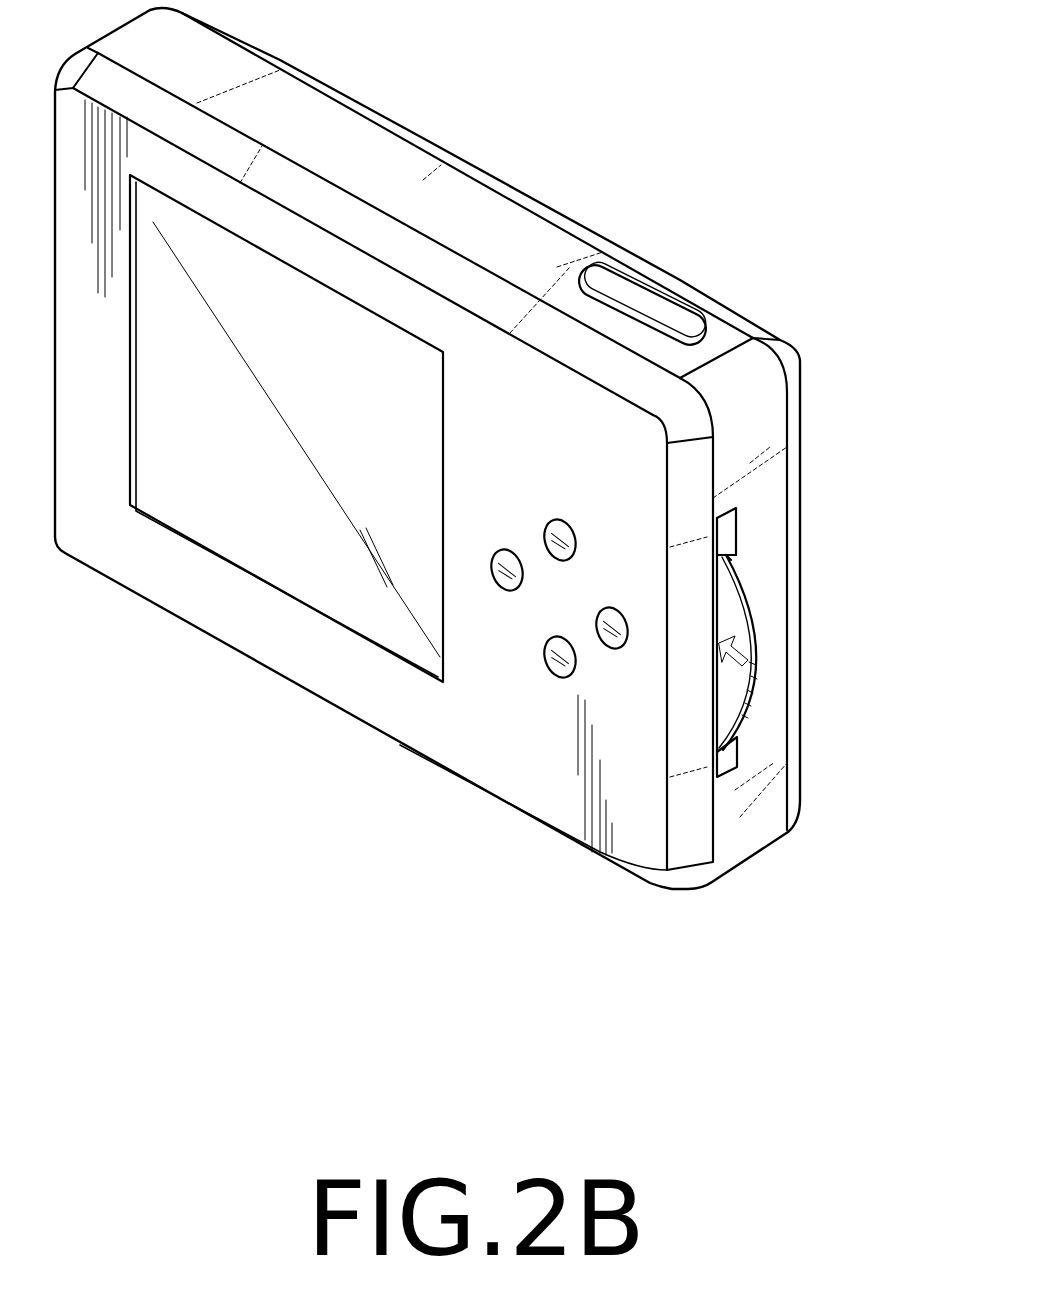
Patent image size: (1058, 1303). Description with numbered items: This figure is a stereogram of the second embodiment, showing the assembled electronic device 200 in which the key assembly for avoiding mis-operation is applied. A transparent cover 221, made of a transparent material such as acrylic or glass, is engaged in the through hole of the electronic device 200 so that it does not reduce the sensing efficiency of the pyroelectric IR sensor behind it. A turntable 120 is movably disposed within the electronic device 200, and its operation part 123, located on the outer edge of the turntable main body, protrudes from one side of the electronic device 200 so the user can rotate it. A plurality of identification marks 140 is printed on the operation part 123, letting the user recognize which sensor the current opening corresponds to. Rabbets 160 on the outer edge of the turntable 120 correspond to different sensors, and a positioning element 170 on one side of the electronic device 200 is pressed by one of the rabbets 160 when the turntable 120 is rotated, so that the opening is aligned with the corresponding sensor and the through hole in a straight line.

The electronic device 200 is at (453, 147).
The transparent cover 221 is at (558, 503).
The positioning element 170 is at (737, 522).
The rabbets 160 is at (737, 552).
The turntable 120 is at (757, 603).
The identification marks 140 is at (752, 690).
The operation part 123 is at (728, 710).